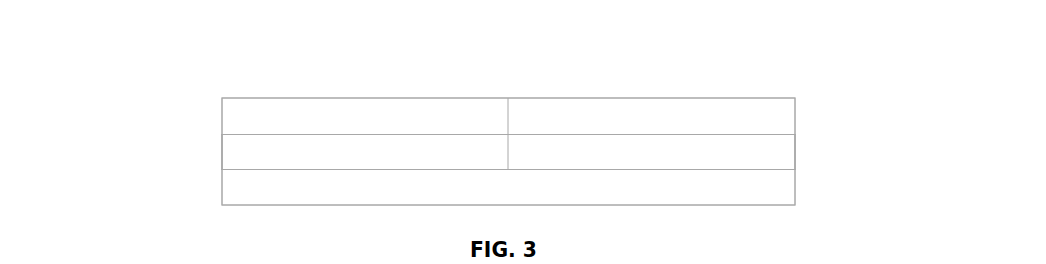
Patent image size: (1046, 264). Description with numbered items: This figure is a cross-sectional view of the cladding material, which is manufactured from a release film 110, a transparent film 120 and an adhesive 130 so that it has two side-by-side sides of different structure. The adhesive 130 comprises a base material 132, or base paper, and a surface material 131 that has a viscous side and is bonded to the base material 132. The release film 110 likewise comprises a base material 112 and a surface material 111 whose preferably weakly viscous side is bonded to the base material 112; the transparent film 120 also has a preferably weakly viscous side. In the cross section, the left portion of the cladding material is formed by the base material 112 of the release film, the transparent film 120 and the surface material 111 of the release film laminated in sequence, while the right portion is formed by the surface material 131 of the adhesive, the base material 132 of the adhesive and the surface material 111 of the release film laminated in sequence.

The release film 110 is at (117, 115).
The surface material of the release film 111 is at (210, 190).
The base material of the release film 112 is at (210, 119).
The transparent film 120 is at (404, 147).
The adhesive 130 is at (893, 85).
The surface material of the adhesive 131 is at (808, 108).
The base material of the adhesive 132 is at (809, 155).